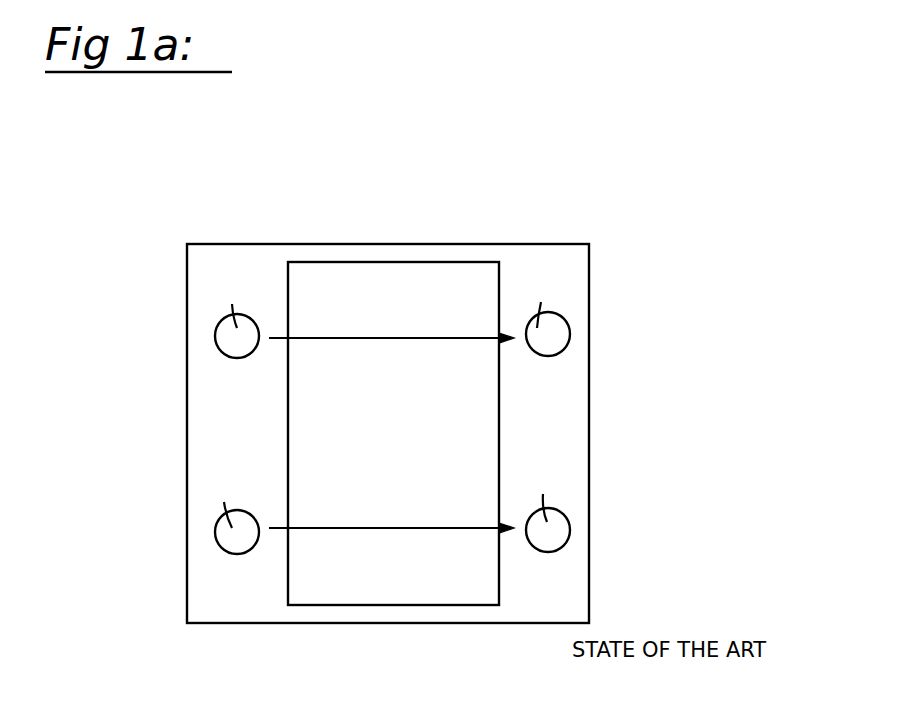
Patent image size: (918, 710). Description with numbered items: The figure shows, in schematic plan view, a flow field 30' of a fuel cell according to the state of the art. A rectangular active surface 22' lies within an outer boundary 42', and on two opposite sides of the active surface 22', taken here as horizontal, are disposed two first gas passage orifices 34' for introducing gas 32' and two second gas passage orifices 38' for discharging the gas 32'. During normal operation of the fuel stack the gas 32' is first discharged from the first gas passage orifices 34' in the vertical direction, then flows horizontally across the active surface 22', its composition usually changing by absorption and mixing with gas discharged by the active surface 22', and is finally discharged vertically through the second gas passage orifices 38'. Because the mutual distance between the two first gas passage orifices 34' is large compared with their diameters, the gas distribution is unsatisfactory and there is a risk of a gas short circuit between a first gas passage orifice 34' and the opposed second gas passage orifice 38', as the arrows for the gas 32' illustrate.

The flow field 30' is at (432, 368).
The housing / outer frame 42' is at (432, 433).
The rectangular active surface 22' is at (393, 433).
The gas 32' is at (391, 406).
The first gas passage orifices 34' is at (232, 405).
The second gas passage orifices 38' is at (552, 403).